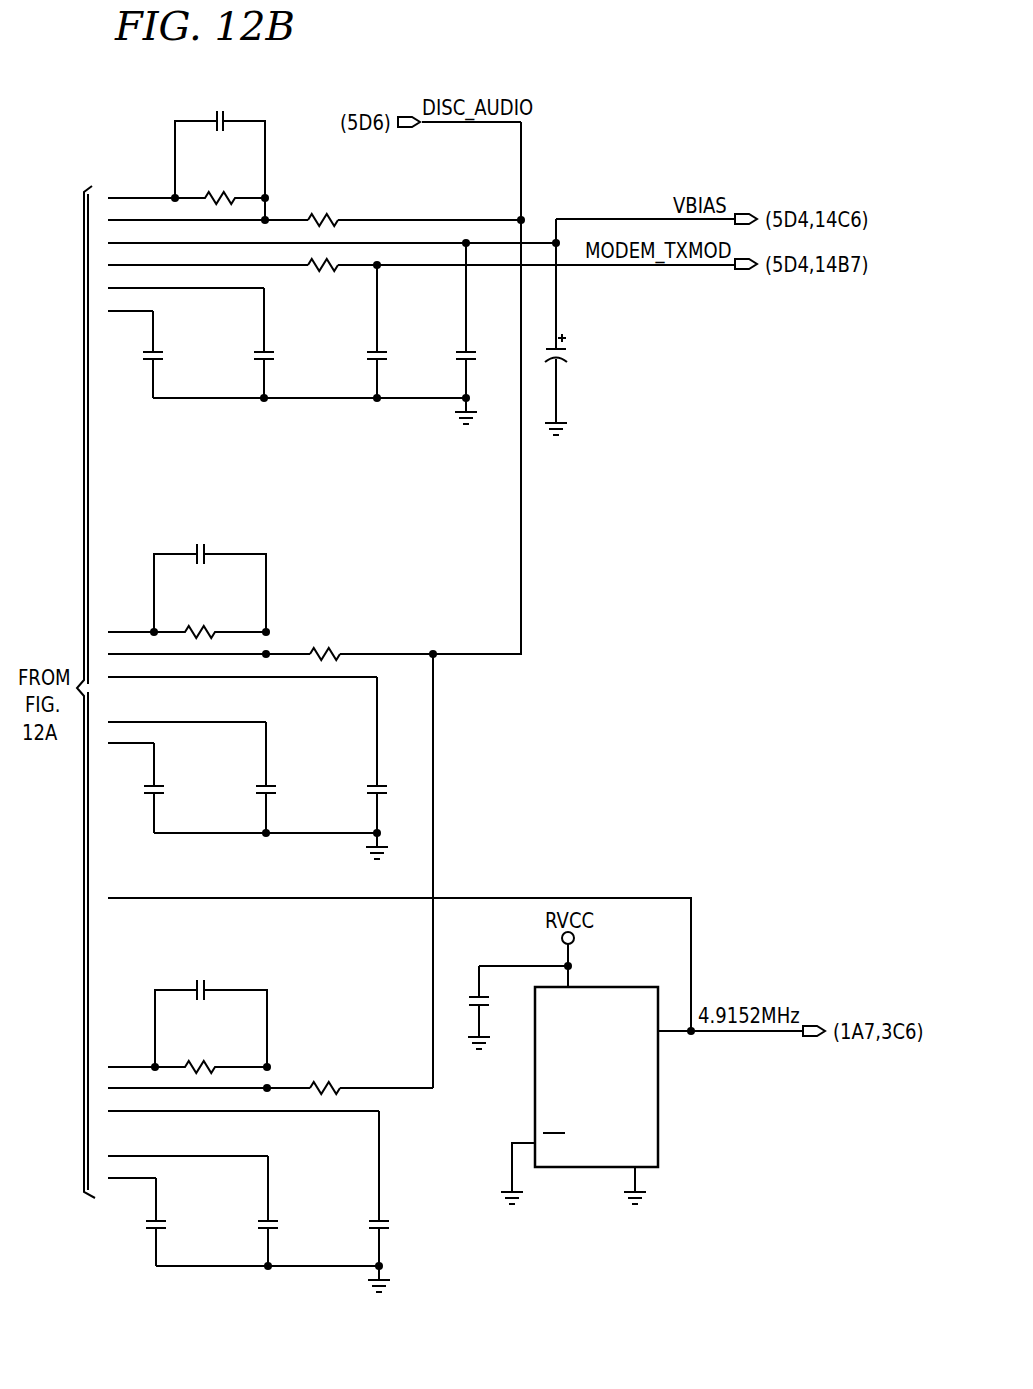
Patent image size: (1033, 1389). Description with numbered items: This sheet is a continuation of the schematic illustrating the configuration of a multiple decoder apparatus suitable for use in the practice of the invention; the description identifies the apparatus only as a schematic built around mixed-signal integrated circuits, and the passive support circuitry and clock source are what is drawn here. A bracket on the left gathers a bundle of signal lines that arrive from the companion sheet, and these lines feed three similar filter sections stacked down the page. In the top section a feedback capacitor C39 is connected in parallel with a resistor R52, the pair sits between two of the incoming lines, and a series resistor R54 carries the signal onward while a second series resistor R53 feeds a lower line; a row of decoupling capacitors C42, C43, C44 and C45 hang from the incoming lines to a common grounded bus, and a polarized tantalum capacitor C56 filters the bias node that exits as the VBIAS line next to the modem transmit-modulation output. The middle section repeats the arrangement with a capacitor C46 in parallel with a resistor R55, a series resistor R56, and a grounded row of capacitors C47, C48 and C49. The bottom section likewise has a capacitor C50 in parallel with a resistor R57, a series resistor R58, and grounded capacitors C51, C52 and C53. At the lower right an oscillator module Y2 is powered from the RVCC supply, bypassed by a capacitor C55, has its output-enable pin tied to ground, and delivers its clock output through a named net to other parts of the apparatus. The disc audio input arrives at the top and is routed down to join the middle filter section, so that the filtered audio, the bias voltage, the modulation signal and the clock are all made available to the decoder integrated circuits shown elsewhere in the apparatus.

The capacitor 82pF C39 is at (220, 127).
The resistor 100K R52 is at (220, 172).
The resistor 39K R54 is at (321, 193).
The resistor 100K R53 is at (321, 277).
The capacitor 4700pF C42 is at (184, 354).
The capacitor 4700pF C43 is at (295, 343).
The capacitor 82pF C44 is at (396, 331).
The capacitor .1uF C45 is at (483, 320).
The tantalum capacitor 10uF 16V C56 is at (604, 365).
The capacitor 82pF C46 is at (210, 560).
The resistor 100K R55 is at (210, 607).
The resistor 39K R56 is at (323, 628).
The capacitor 4700pF C47 is at (185, 788).
The capacitor 4700pF C48 is at (297, 777).
The capacitor .1uF C49 is at (394, 755).
The capacitor 82pF C50 is at (211, 995).
The resistor 100K R57 is at (211, 1042).
The resistor 39K R58 is at (323, 1063).
The capacitor 4700pF C51 is at (187, 1222).
The capacitor 4700pF C52 is at (299, 1211).
The capacitor .1uF C53 is at (396, 1188).
The capacitor .1uF C55 is at (495, 1001).
The 4.9152MHz oscillator Y2 is at (596, 1075).